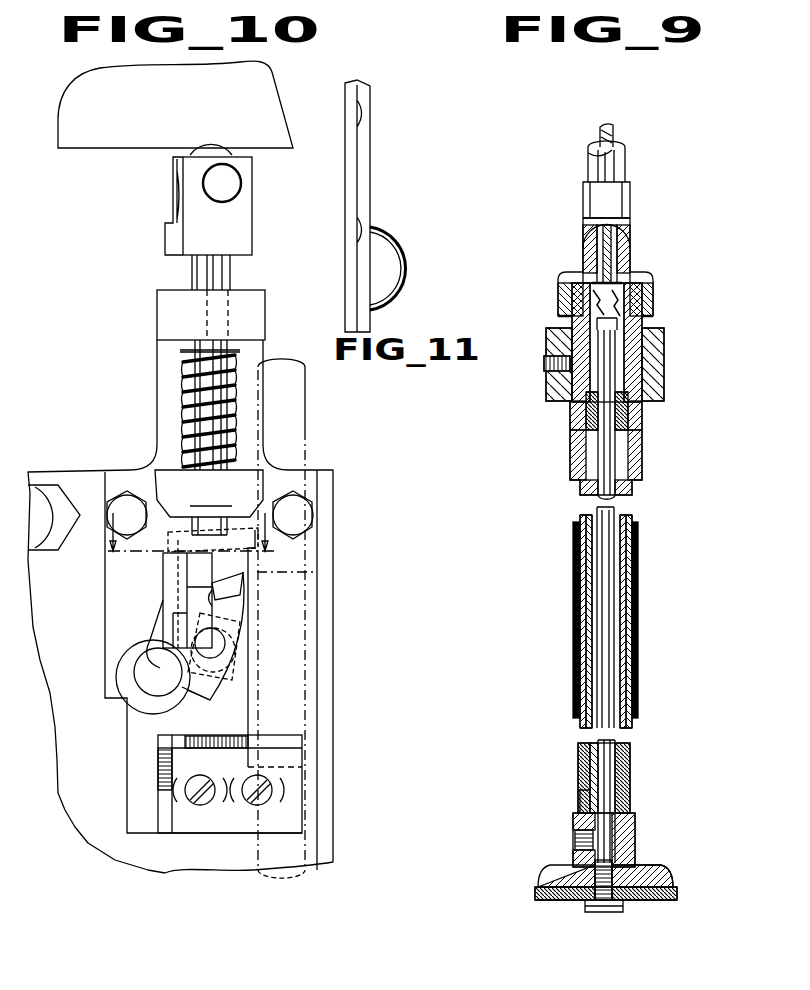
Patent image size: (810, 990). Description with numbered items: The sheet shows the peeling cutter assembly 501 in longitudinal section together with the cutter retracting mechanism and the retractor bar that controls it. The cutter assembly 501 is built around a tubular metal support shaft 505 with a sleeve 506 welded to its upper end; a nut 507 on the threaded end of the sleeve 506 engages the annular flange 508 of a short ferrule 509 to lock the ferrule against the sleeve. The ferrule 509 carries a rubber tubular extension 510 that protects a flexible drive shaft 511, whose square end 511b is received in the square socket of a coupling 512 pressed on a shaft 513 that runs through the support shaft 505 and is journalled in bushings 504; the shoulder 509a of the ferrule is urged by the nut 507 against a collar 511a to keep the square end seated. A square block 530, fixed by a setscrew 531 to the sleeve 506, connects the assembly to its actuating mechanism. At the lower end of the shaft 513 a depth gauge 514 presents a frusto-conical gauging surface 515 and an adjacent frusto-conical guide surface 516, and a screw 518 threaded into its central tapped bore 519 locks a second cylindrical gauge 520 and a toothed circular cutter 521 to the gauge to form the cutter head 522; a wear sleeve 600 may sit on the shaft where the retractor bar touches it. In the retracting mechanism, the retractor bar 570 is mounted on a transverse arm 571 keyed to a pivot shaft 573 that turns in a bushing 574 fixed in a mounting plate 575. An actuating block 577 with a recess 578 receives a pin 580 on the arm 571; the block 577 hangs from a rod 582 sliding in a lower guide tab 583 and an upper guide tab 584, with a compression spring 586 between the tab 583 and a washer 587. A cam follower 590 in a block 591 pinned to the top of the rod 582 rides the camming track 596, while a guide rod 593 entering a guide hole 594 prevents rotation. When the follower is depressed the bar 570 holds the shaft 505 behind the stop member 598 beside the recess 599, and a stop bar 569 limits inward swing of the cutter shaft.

In FIG. 10, the camming track 596 is at (238, 109).
In FIG. 10, the cam follower 590 is at (216, 151).
In FIG. 10, the block 591 is at (243, 238).
In FIG. 10, the guide rod 593 is at (232, 262).
In FIG. 10, the rod 582 is at (192, 271).
In FIG. 10, the upper guide tab 584 is at (165, 311).
In FIG. 10, the guide hole 594 is at (225, 311).
In FIG. 10, the washer 587 is at (180, 351).
In FIG. 10, the compression spring 586 is at (190, 385).
In FIG. 10, the lower guide tab 583 is at (209, 502).
In FIG. 10, the tubular metal support shaft 505 is at (305, 425).
In FIG. 9, the tubular metal support shaft 505 is at (632, 516).
In FIG. 10, the retractor bar 570 is at (165, 568).
In FIG. 11, the retractor bar 570 is at (363, 92).
In FIG. 10, the mounting plate 575 is at (118, 592).
In FIG. 10, the stop member 598 is at (250, 580).
In FIG. 11, the stop member 598 is at (380, 248).
In FIG. 10, the bushing 574 is at (128, 652).
In FIG. 10, the recess 578 is at (236, 657).
In FIG. 10, the pin 580 is at (222, 655).
In FIG. 10, the actuating block 577 is at (257, 683).
In FIG. 10, the transverse arm 571 is at (180, 684).
In FIG. 10, the pivot shaft 573 is at (145, 690).
In FIG. 10, the stop bar 569 is at (228, 742).
In FIG. 11, the recess 599 is at (365, 165).
In FIG. 9, the flexible drive shaft 511 is at (613, 134).
In FIG. 9, the rubber tubular extension 510 is at (615, 160).
In FIG. 9, the ferrule 509 is at (630, 225).
In FIG. 9, the shoulder 509a is at (586, 277).
In FIG. 9, the annular flange 508 is at (633, 276).
In FIG. 9, the nut 507 is at (650, 293).
In FIG. 9, the collar 511a is at (590, 295).
In FIG. 9, the square end 511b is at (600, 311).
In FIG. 9, the coupling 512 is at (620, 310).
In FIG. 9, the square block 530 is at (662, 348).
In FIG. 9, the shaft 513 is at (615, 386).
In FIG. 9, the setscrew 531 is at (550, 370).
In FIG. 9, the bushings 504 is at (625, 412).
In FIG. 9, the sleeve 506 is at (640, 430).
In FIG. 9, the cutter assembly 501 is at (570, 555).
In FIG. 9, the wear sleeve 600 is at (578, 575).
In FIG. 9, the depth gauge 514 is at (635, 826).
In FIG. 9, the frusto-conical gauging surface 515 is at (660, 880).
In FIG. 9, the frusto-conical guide surface 516 is at (671, 885).
In FIG. 9, the circular cutter 521 is at (675, 891).
In FIG. 9, the central tapped bore 519 is at (598, 866).
In FIG. 9, the cutter head 522 is at (540, 897).
In FIG. 9, the screw 518 is at (593, 907).
In FIG. 9, the second cylindrical gauge 520 is at (652, 901).